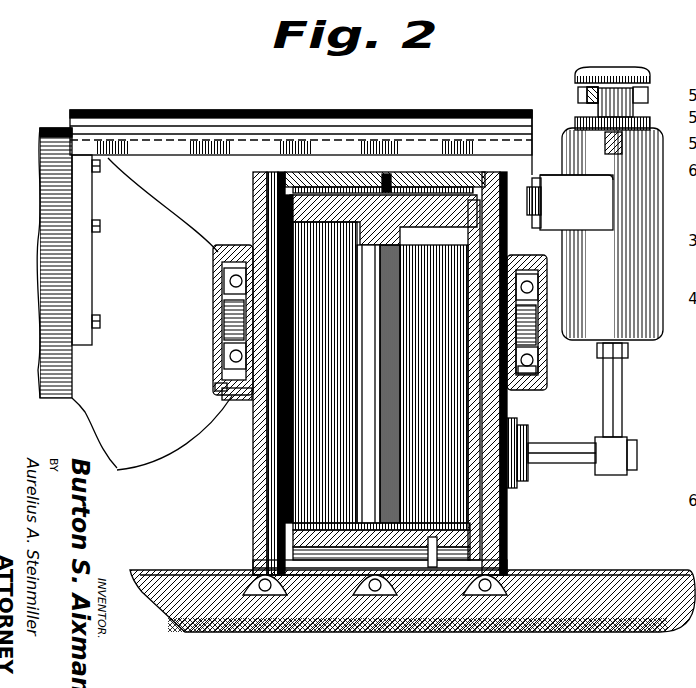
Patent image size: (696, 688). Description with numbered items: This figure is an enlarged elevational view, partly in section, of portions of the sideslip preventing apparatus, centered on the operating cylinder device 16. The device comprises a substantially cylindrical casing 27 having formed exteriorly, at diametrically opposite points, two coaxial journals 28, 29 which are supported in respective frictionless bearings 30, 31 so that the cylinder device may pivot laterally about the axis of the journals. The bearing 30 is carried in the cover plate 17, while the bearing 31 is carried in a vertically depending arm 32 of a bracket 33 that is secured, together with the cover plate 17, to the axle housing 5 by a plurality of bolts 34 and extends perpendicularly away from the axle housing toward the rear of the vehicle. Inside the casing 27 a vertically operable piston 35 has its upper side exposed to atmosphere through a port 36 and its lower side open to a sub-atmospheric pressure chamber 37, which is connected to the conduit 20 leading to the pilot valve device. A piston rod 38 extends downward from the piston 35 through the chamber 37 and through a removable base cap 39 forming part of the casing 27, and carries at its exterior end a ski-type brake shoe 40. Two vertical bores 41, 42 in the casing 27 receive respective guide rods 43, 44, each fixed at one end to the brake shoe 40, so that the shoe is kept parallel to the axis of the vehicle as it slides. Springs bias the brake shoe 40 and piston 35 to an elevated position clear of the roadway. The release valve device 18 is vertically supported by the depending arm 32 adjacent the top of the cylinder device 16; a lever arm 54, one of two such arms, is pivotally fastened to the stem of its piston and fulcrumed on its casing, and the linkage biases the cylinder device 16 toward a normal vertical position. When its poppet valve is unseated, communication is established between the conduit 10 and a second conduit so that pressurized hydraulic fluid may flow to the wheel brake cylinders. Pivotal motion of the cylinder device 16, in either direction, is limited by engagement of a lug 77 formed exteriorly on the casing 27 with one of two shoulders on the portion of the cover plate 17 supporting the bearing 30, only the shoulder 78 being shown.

The axle housing 5 is at (47, 128).
The bracket 33 is at (203, 120).
The bolts 34 is at (102, 170).
The cover plate 17 is at (200, 226).
The casing 27 is at (307, 172).
The port 36 is at (388, 174).
The piston 35 is at (405, 210).
The piston rod 38 is at (398, 290).
The sub-atmospheric pressure chamber 37 is at (410, 384).
The frictionless bearing 30 is at (233, 309).
The journal 28 is at (213, 333).
The lug 77 is at (246, 398).
The shoulder 78 is at (220, 400).
The operating cylinder device 16 is at (255, 500).
The vertical bore 41 is at (262, 478).
The guide rod 43 is at (270, 457).
The base cap 39 is at (410, 527).
The conduit 20 is at (443, 530).
The vertical bore 42 is at (506, 505).
The guide rod 44 is at (500, 524).
The journal 29 is at (530, 320).
The frictionless bearing 31 is at (540, 378).
The conduit 10 is at (600, 375).
The release valve device 18 is at (675, 221).
The lever arm 54 is at (578, 96).
The depending arm 32 is at (527, 212).
The brake shoe 40 is at (527, 607).